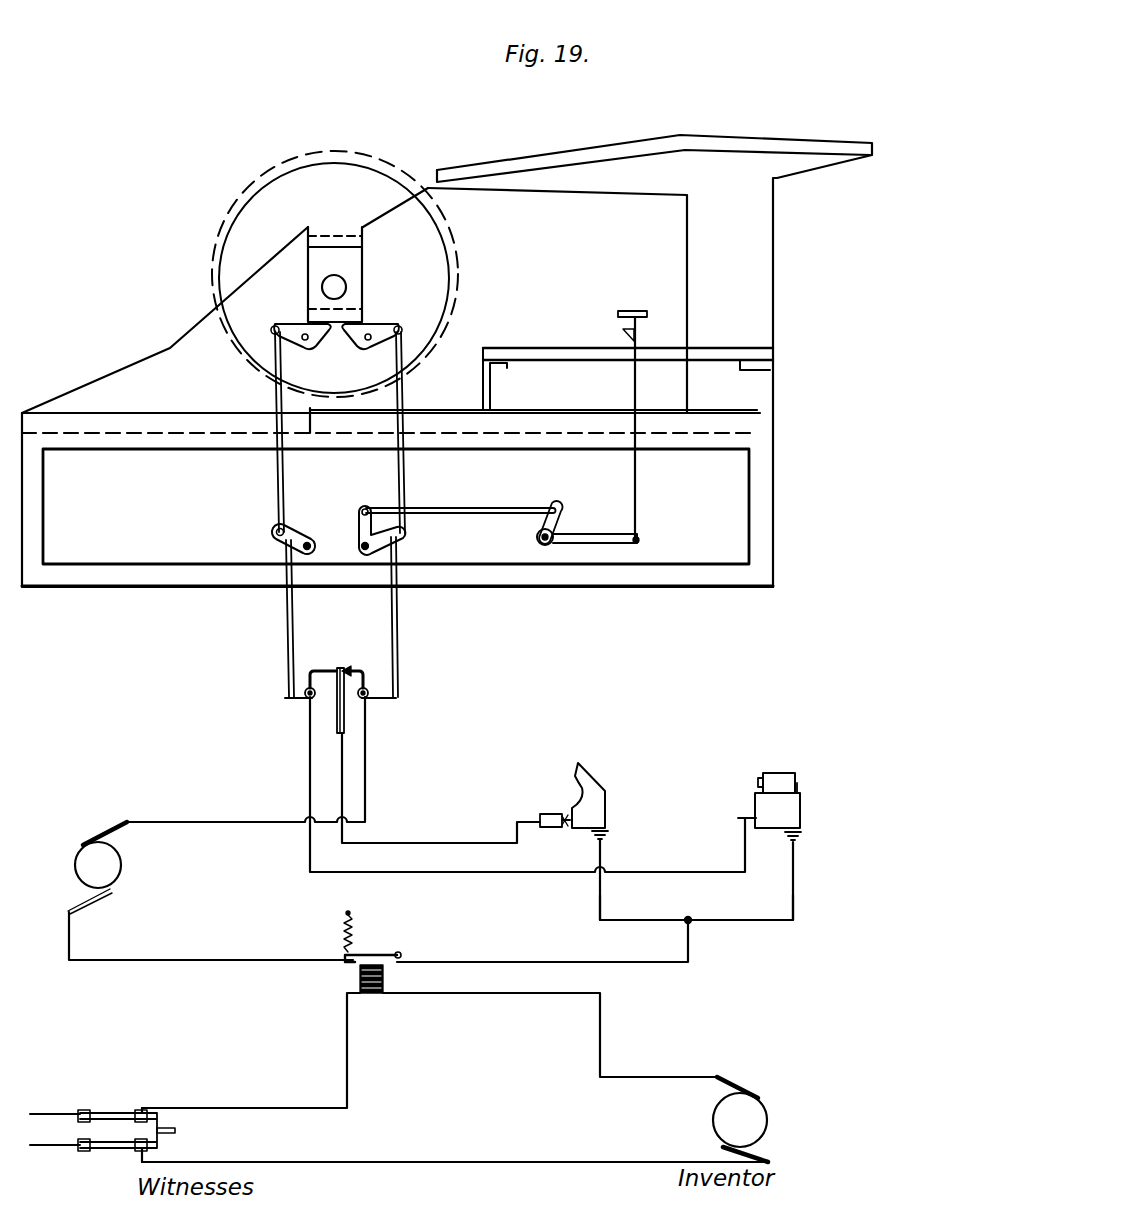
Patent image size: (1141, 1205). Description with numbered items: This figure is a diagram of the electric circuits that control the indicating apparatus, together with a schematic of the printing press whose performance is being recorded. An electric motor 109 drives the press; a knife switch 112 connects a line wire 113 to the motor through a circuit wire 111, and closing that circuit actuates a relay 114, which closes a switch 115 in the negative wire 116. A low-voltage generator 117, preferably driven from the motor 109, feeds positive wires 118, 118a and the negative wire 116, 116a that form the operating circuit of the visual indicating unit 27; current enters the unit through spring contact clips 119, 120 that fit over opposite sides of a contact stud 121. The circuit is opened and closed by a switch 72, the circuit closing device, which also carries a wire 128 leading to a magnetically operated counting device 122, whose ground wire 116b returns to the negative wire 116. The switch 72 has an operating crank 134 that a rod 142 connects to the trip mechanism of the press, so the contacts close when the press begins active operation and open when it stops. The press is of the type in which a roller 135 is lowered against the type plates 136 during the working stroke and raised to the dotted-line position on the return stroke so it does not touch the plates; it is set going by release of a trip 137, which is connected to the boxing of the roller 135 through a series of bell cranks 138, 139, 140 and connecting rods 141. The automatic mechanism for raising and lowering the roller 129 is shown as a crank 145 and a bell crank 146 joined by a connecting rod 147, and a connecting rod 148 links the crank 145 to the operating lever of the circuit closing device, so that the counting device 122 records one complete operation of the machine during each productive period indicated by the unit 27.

The roller 135 is at (288, 177).
The roller 129 is at (249, 205).
The bell crank 146 is at (283, 323).
The bell crank 140 is at (389, 326).
The connecting rod 147 is at (275, 467).
The connecting rods 141 is at (400, 470).
The crank 145 is at (294, 538).
The bell crank 139 is at (360, 522).
The connecting rod 148 is at (285, 613).
The rod 142 is at (392, 628).
The trip 137 is at (633, 466).
The bell crank 138 is at (590, 526).
The type plates 136 is at (512, 412).
The operating crank 134 is at (380, 698).
The switch 72 is at (337, 722).
The generator 117 is at (80, 846).
The positive wire 118 is at (223, 823).
The positive wire 118a is at (473, 842).
The wire 128 is at (447, 875).
The spring contact clip 119 is at (545, 813).
The spring contact clip 120 is at (548, 828).
The contact stud 121 is at (563, 813).
The visual indicating unit 27 is at (608, 802).
The counting device 122 is at (782, 802).
The negative wire 116a is at (600, 903).
The ground wire 116b is at (798, 903).
The negative wire 116 is at (265, 963).
The switch 115 is at (373, 953).
The relay 114 is at (358, 981).
The electric motor 109 is at (760, 1118).
The circuit wire 111 is at (305, 1110).
The knife switch 112 is at (117, 1150).
The line wire 113 is at (58, 1110).